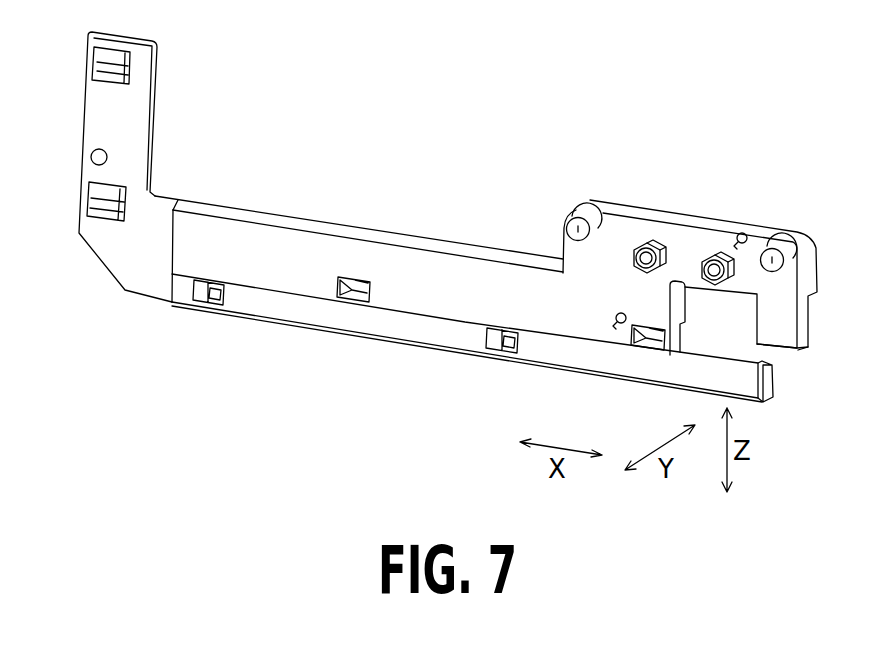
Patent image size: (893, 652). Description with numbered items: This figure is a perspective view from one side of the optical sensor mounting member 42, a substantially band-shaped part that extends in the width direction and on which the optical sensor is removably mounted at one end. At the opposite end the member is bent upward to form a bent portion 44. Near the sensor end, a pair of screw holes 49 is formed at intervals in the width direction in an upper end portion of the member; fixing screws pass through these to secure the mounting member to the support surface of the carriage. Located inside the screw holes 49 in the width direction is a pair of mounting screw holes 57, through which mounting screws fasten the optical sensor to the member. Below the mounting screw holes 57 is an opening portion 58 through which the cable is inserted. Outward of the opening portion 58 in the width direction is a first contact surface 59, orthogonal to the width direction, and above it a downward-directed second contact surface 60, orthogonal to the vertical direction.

The optical sensor mounting member 42 is at (505, 128).
The bent portion 44 is at (83, 134).
The screw holes 49 is at (604, 212).
The mounting screw holes 57 is at (648, 243).
The opening portion 58 is at (670, 302).
The first contact surface 59 is at (773, 386).
The second contact surface 60 is at (776, 352).